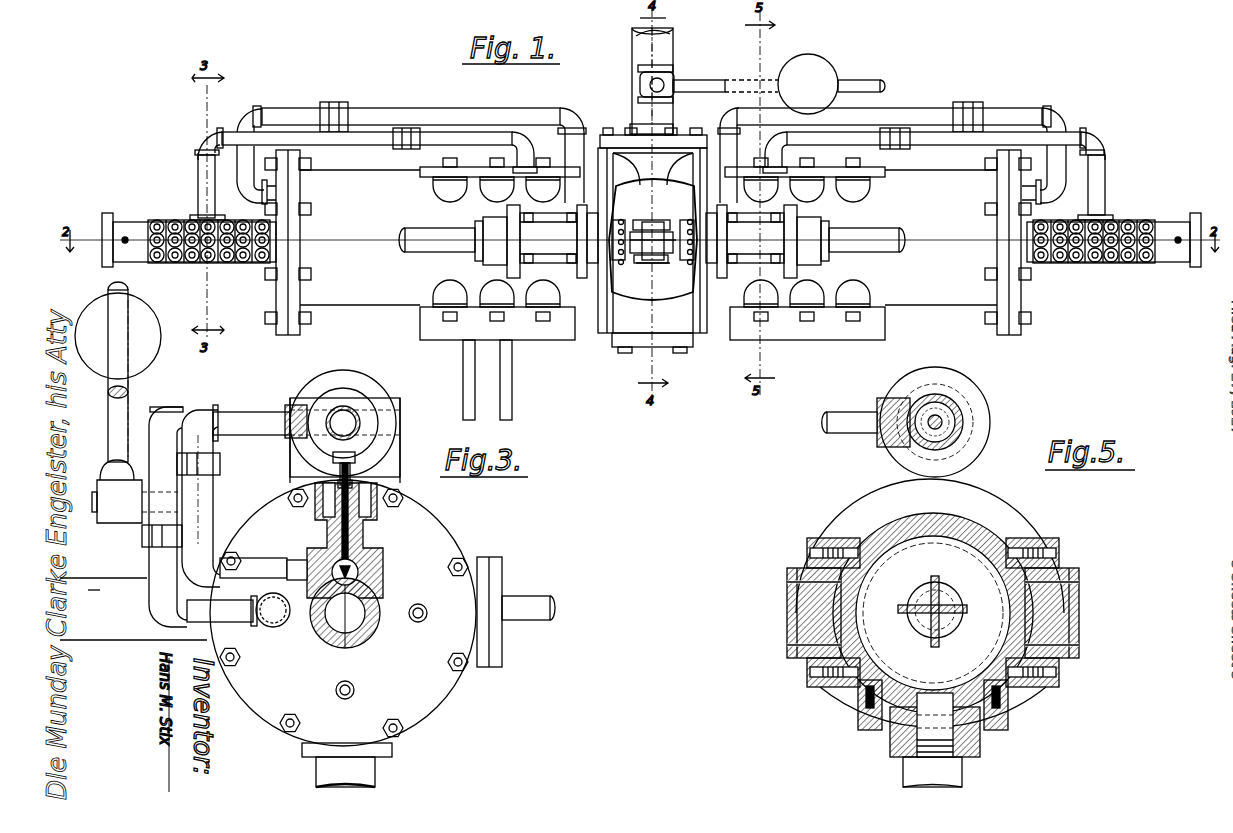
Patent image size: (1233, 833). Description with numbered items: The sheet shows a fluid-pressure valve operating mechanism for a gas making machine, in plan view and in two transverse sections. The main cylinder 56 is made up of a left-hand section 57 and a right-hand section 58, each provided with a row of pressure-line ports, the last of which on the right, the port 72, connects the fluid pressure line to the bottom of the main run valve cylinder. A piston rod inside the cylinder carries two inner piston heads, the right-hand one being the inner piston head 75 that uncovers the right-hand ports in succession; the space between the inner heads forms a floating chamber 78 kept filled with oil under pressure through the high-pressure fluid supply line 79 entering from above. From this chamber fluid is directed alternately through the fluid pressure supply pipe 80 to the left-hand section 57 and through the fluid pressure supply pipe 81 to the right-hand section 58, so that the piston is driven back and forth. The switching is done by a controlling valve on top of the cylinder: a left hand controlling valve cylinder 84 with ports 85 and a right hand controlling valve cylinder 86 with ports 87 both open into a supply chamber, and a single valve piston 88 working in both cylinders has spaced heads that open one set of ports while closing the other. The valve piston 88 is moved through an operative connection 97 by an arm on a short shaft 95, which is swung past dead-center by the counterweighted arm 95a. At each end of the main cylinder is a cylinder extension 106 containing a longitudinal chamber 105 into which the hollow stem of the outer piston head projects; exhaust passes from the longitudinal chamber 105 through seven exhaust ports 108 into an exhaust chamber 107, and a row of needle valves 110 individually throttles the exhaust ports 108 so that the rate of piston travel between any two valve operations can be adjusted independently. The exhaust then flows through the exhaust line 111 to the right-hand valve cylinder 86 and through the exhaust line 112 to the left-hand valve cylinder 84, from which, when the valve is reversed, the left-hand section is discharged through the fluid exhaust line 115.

In FIG. 1, the cylinder 56 is at (612, 333).
In FIG. 1, the left-hand section 57 is at (356, 305).
In FIG. 1, the right-hand section 58 is at (948, 303).
In FIG. 5, the right-hand section 58 is at (933, 604).
In FIG. 5, the port 72 is at (934, 700).
In FIG. 5, the inner piston head 75 is at (920, 606).
In FIG. 1, the floating chamber 78 is at (653, 239).
In FIG. 1, the high-pressure fluid supply line 79 is at (665, 60).
In FIG. 3, the high-pressure fluid supply line 79 is at (98, 598).
In FIG. 1, the fluid pressure supply pipe 80 is at (405, 118).
In FIG. 3, the fluid pressure supply pipe 80 is at (162, 566).
In FIG. 1, the fluid pressure supply pipe 81 is at (922, 117).
In FIG. 1, the left hand controlling valve cylinder 84 is at (536, 241).
In FIG. 3, the left hand controlling valve cylinder 84 is at (372, 422).
In FIG. 1, the ports 85 is at (621, 220).
In FIG. 1, the right hand controlling valve cylinder 86 is at (805, 241).
In FIG. 5, the right hand controlling valve cylinder 86 is at (965, 415).
In FIG. 1, the ports 87 is at (668, 222).
In FIG. 1, the valve piston 88 is at (652, 220).
In FIG. 1, the short shaft 95 is at (650, 104).
In FIG. 3, the short shaft 95 is at (130, 515).
In FIG. 1, the counterweighted arm 95a is at (830, 66).
In FIG. 3, the counterweighted arm 95a is at (145, 352).
In FIG. 1, the operative connection 97 is at (654, 263).
In FIG. 3, the longitudinal chamber 105 is at (340, 620).
In FIG. 1, the cylinder extension 106 is at (125, 222).
In FIG. 3, the cylinder extension 106 is at (372, 628).
In FIG. 3, the exhaust chamber 107 is at (372, 552).
In FIG. 3, the exhaust ports 108 is at (385, 615).
In FIG. 1, the needle valves 110 is at (200, 220).
In FIG. 3, the needle valves 110 is at (350, 459).
In FIG. 1, the exhaust line 111 is at (958, 140).
In FIG. 5, the exhaust line 111 is at (847, 420).
In FIG. 1, the exhaust line 112 is at (362, 140).
In FIG. 3, the exhaust line 112 is at (205, 498).
In FIG. 1, the fluid exhaust line 115 is at (424, 235).
In FIG. 3, the fluid exhaust line 115 is at (330, 410).